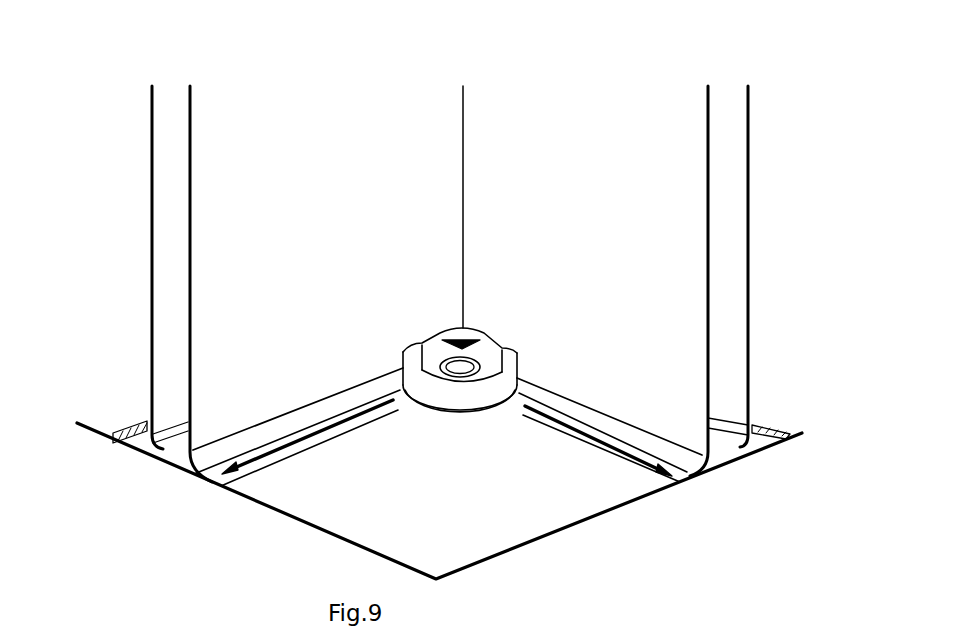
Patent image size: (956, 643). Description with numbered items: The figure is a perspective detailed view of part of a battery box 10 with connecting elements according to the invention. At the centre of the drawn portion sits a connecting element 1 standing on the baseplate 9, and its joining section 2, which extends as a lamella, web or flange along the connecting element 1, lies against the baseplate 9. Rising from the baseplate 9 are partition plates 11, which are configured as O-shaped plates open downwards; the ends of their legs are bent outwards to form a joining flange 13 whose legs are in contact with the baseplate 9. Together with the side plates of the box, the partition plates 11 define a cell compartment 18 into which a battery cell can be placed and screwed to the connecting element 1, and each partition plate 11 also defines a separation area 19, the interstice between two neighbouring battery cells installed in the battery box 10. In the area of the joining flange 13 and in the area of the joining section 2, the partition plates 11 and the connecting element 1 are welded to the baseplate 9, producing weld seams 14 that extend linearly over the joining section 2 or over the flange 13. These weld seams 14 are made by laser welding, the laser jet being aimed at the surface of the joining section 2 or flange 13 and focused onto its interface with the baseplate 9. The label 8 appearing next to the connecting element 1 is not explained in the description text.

The connecting element 1 is at (613, 351).
The joining section 2 is at (432, 410).
The threaded bushing 8 is at (460, 235).
The baseplate 9 is at (497, 520).
The battery box 10 is at (187, 558).
The partition plate 11 is at (177, 150).
The joining flange 13 is at (118, 447).
The weld seam 14 is at (128, 438).
The cell compartment 18 is at (537, 115).
The separation area 19 is at (182, 442).